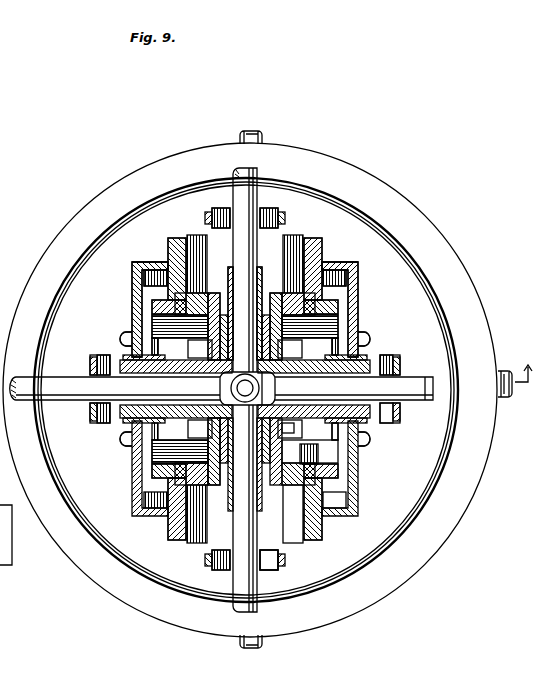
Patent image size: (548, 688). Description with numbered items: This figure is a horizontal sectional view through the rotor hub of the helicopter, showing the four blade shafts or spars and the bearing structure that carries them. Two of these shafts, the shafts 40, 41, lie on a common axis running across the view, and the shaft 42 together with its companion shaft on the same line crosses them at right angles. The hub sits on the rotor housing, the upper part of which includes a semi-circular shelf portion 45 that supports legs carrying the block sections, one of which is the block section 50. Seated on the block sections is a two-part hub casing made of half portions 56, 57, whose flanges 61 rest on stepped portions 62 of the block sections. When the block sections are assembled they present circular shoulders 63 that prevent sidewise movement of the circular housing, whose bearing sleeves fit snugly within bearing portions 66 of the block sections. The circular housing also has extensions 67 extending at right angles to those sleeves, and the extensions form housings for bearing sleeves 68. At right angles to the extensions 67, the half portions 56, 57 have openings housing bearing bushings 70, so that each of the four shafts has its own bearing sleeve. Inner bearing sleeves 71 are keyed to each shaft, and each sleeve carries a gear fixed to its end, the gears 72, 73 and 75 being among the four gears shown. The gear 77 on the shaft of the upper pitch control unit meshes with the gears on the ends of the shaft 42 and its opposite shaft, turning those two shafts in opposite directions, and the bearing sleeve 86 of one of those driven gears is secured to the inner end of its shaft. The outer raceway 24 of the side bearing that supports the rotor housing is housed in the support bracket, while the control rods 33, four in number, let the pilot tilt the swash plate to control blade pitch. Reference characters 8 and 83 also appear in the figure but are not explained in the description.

The direction arrow 8 is at (523, 388).
The outer raceway 24 is at (492, 398).
The control rods 33 is at (266, 138).
The shaft 40 is at (42, 383).
The shaft 41 is at (406, 378).
The shaft 42 is at (291, 565).
The semi-circular shelf portion 45 is at (256, 170).
The one-half block section 50 is at (140, 310).
The half portion of hub casing 56 is at (140, 268).
The half portion of hub casing 57 is at (353, 272).
The flanges 61 is at (170, 246).
The stepped portions 62 is at (195, 233).
The circular shoulders 63 is at (126, 322).
The bearing portions 66 is at (194, 292).
The extensions 67 is at (272, 300).
The bearing sleeves 68 is at (221, 295).
The bearing bushings 70 is at (352, 356).
The inner bearing sleeves 71 is at (95, 367).
The gear 72 is at (219, 389).
The gear 73 is at (245, 388).
The gear 75 is at (276, 389).
The gear 77 is at (292, 433).
The pinion 83 is at (92, 411).
The bearing sleeve 86 is at (260, 289).